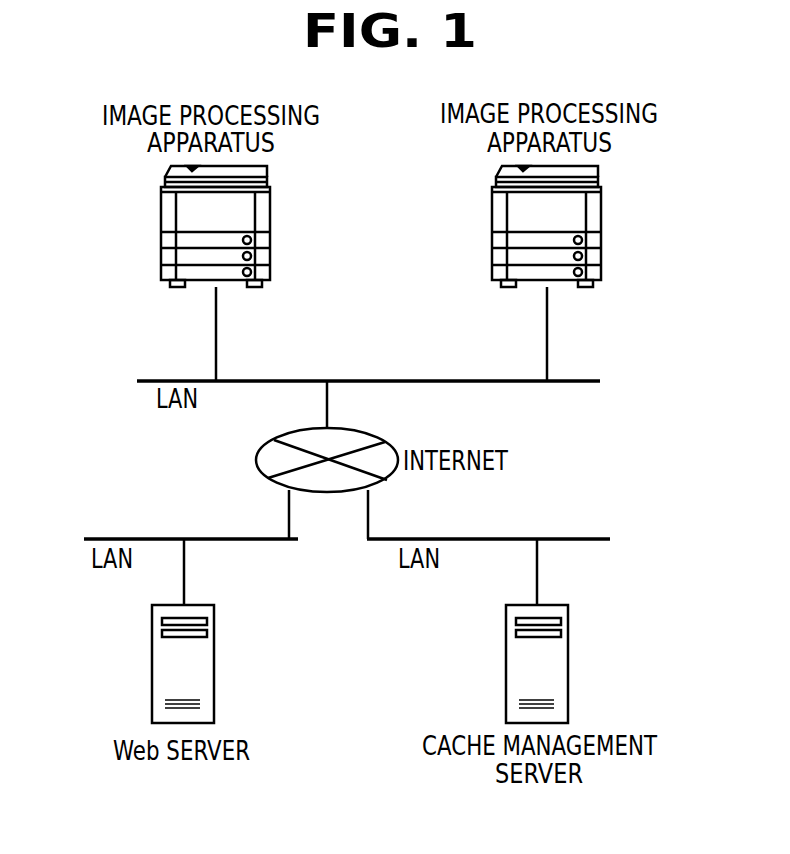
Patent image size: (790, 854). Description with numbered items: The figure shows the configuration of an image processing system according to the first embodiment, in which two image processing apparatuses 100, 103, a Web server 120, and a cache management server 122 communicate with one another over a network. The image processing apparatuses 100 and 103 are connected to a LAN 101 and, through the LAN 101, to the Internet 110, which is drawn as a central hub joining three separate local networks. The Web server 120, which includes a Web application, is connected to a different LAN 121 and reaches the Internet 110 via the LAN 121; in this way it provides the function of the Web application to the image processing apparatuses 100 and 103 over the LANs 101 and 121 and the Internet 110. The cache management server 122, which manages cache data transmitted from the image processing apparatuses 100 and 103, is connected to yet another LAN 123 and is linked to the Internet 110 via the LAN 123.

The image processing apparatus 100 is at (272, 201).
The image processing apparatus 103 is at (603, 201).
The LAN 101 is at (163, 379).
The Internet 110 is at (393, 443).
The LAN 121 is at (110, 536).
The LAN 123 is at (598, 536).
The Web server 120 is at (215, 618).
The cache management server 122 is at (569, 618).